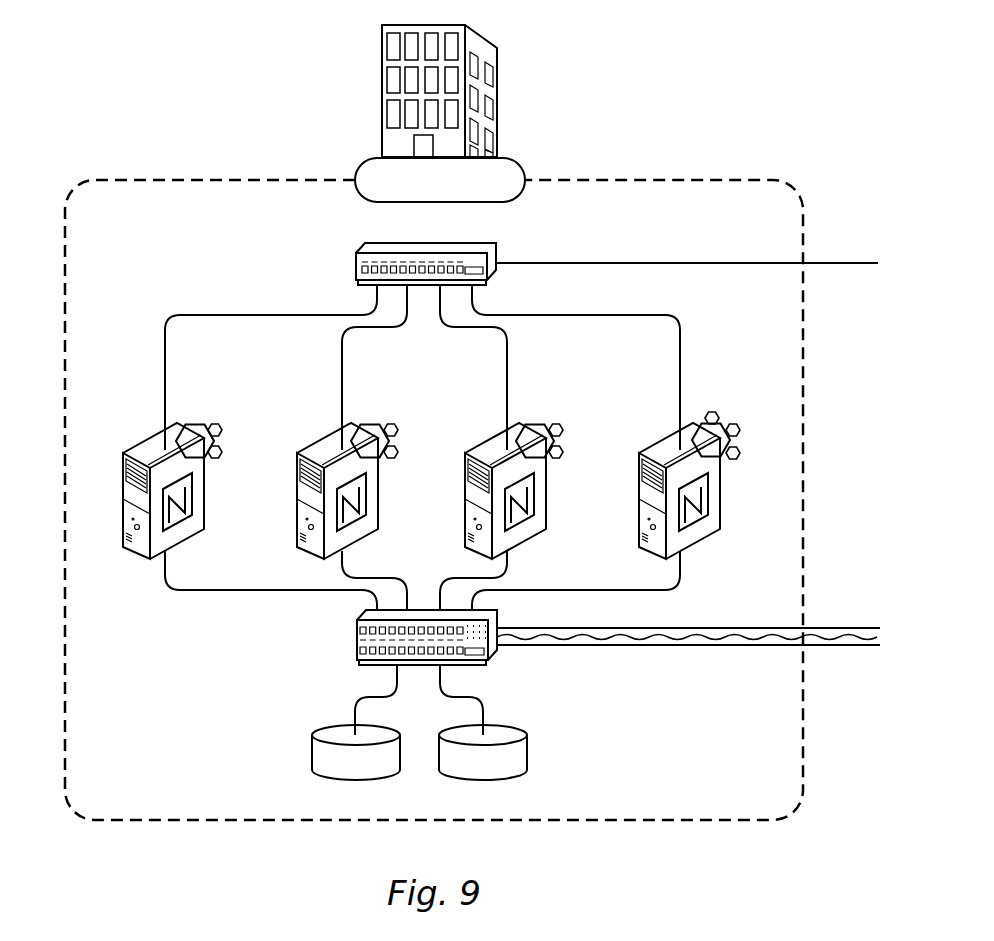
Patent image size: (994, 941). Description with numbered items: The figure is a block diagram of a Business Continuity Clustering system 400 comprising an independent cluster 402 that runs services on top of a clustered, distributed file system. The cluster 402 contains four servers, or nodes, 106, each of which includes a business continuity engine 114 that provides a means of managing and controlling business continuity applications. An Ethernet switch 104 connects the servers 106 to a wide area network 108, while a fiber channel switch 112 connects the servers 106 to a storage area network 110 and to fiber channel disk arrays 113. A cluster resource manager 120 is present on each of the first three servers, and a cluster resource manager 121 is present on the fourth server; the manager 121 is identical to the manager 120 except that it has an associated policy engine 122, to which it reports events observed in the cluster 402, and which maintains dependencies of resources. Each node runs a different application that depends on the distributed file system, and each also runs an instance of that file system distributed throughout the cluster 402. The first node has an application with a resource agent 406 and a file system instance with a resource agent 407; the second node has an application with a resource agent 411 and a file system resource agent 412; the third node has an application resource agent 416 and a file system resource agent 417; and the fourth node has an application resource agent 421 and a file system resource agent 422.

The BCC system 400 is at (712, 84).
The independent cluster 402 is at (172, 177).
The Ethernet switch 104 is at (356, 266).
The server 106 is at (190, 522).
The wide area network 108 is at (843, 265).
The storage area network 110 is at (845, 650).
The fiber channel switch 112 is at (356, 646).
The fiber channel disk arrays 113 is at (304, 757).
The business continuity engine 114 is at (138, 448).
The cluster resource manager 120 is at (198, 424).
The cluster resource manager 121 is at (707, 436).
The policy engine 122 is at (739, 429).
The resource agent 406 is at (219, 425).
The resource agent 407 is at (220, 459).
The resource agent 411 is at (396, 425).
The resource agent 412 is at (396, 459).
The resource agent 416 is at (562, 425).
The resource agent 417 is at (562, 459).
The resource agent 421 is at (718, 416).
The resource agent 422 is at (736, 459).